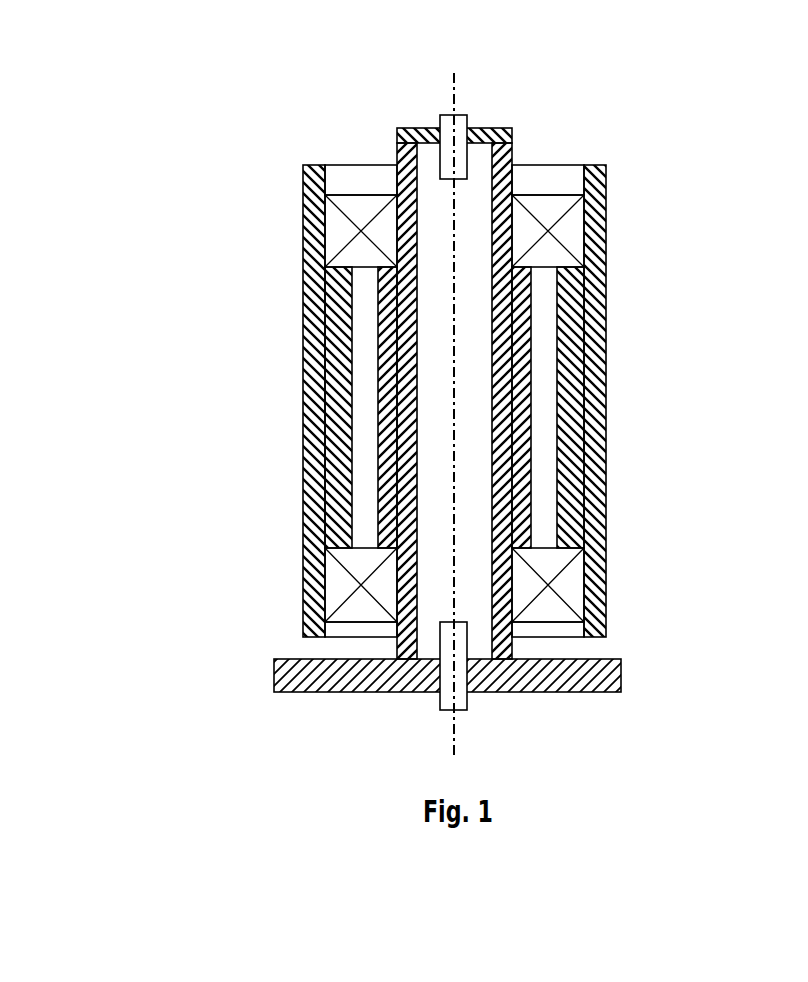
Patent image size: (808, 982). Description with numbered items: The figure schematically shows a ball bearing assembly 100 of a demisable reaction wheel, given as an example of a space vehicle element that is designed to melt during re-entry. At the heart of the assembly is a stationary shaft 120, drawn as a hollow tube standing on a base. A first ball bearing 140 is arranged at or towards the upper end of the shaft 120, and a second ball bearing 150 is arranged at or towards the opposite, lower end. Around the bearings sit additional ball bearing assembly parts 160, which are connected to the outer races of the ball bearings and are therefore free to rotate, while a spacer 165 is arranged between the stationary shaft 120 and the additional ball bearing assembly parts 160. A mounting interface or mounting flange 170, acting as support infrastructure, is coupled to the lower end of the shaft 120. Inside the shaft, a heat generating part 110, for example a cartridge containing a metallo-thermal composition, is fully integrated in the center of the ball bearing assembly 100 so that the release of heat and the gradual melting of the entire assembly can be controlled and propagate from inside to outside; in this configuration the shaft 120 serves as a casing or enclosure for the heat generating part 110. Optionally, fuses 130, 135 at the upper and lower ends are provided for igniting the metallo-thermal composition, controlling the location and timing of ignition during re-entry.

The ball bearing assembly 100 is at (193, 100).
The heat generating part 110 is at (433, 530).
The stationary shaft 120 is at (410, 333).
The fuse 130 is at (467, 122).
The fuse 135 is at (447, 698).
The first ball bearing 140 is at (558, 205).
The second ball bearing 150 is at (548, 608).
The additional ball bearing assembly parts 160 is at (568, 395).
The spacer 165 is at (490, 428).
The mounting flange 170 is at (620, 682).